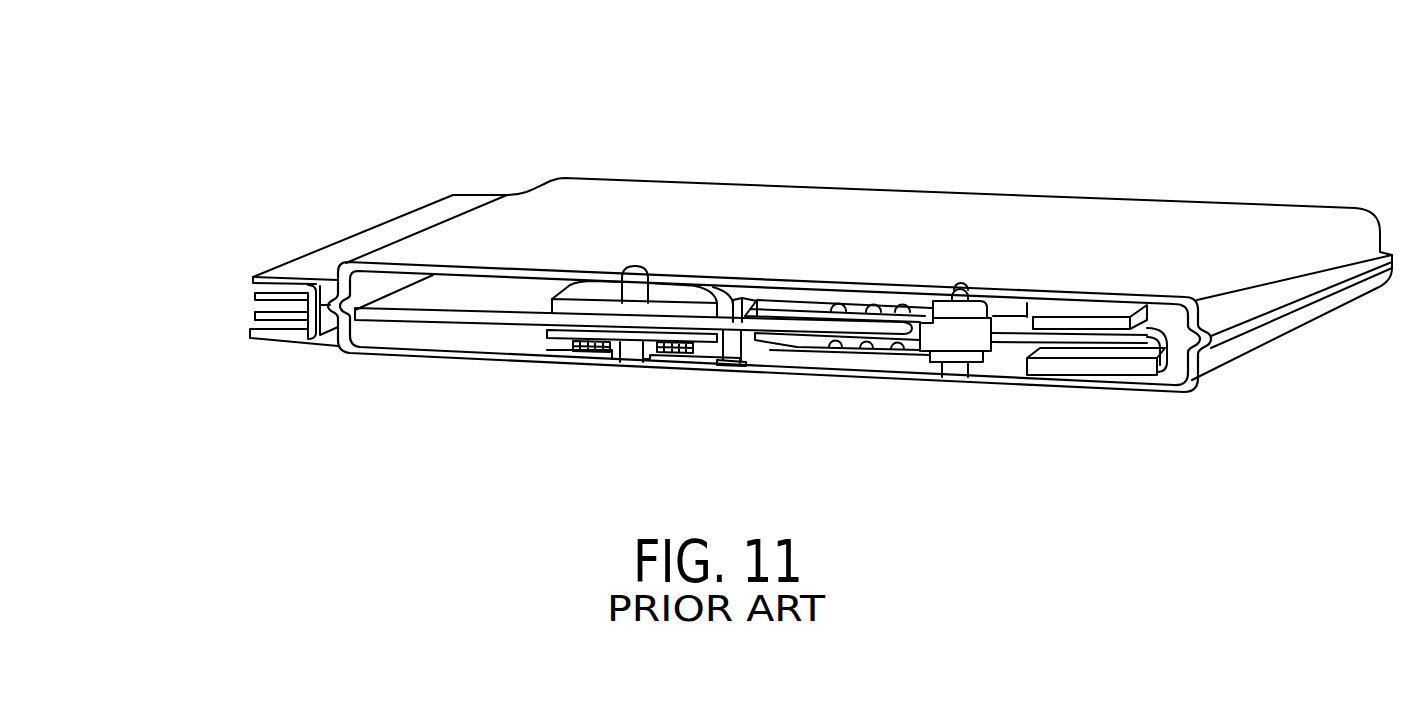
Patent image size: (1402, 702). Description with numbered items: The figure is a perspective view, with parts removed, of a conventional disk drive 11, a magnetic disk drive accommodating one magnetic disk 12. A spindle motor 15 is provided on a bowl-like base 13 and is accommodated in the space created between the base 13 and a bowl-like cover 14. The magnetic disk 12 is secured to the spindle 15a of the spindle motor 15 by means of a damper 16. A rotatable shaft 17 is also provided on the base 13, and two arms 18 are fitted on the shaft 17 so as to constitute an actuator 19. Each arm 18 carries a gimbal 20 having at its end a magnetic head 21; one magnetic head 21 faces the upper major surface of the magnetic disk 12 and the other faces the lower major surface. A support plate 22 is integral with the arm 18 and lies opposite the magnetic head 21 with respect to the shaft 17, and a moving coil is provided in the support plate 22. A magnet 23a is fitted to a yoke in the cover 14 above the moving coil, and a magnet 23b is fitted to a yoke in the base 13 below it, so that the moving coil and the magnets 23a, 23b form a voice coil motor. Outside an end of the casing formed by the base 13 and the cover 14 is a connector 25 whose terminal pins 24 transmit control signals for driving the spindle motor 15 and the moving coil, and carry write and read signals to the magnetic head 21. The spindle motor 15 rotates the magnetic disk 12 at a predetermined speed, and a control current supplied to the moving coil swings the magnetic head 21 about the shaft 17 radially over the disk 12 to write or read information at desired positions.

The disk drive 11 is at (745, 59).
The magnetic disk 12 is at (422, 314).
The base 13 is at (1312, 330).
The cover 14 is at (1196, 219).
The spindle motor 15 is at (630, 347).
The spindle 15a is at (633, 273).
The damper 16 is at (561, 284).
The rotatable shaft 17 is at (961, 344).
The arms 18 is at (887, 304).
The actuator 19 is at (910, 354).
The gimbal 20 is at (788, 301).
The magnetic head 21 is at (738, 303).
The support plate 22 is at (1015, 336).
The magnet 23a is at (1117, 320).
The magnet 23b is at (1113, 358).
The terminal pins 24 is at (252, 298).
The connector 25 is at (347, 251).